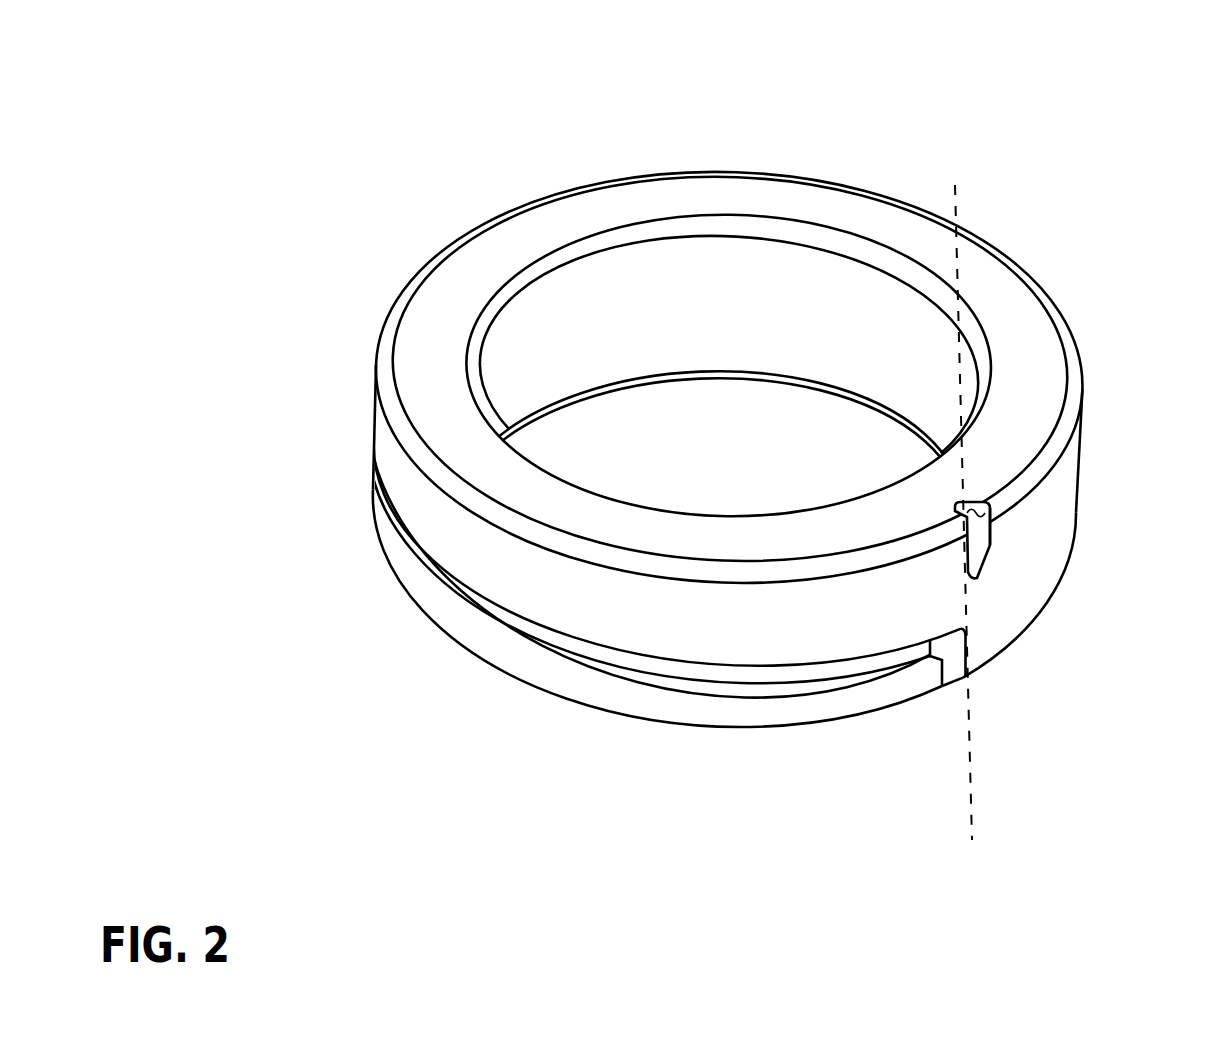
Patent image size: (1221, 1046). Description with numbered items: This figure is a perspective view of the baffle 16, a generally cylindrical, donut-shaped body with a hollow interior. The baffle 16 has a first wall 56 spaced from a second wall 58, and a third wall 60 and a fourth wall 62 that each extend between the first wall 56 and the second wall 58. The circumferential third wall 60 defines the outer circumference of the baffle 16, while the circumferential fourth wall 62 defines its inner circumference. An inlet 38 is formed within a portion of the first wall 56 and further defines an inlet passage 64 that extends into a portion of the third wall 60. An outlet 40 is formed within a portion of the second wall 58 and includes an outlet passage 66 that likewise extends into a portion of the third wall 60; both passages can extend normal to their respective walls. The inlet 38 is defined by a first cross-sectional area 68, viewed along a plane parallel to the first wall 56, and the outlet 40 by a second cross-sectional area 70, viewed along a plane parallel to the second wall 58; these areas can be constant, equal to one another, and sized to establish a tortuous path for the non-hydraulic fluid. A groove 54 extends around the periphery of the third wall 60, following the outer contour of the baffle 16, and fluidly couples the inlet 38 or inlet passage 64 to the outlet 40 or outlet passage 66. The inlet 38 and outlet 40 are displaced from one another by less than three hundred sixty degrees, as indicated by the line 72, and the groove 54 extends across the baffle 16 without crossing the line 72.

The baffle 16 is at (1155, 74).
The inlet 38 is at (992, 507).
The outlet 40 is at (941, 662).
The groove 54 is at (736, 692).
The first wall 56 is at (1027, 274).
The second wall 58 is at (652, 720).
The third wall 60 is at (376, 416).
The fourth wall 62 is at (528, 288).
The inlet passage 64 is at (992, 540).
The outlet passage 66 is at (963, 636).
The first cross-sectional area 68 is at (976, 510).
The second cross-sectional area 70 is at (957, 680).
The line 72 is at (975, 735).